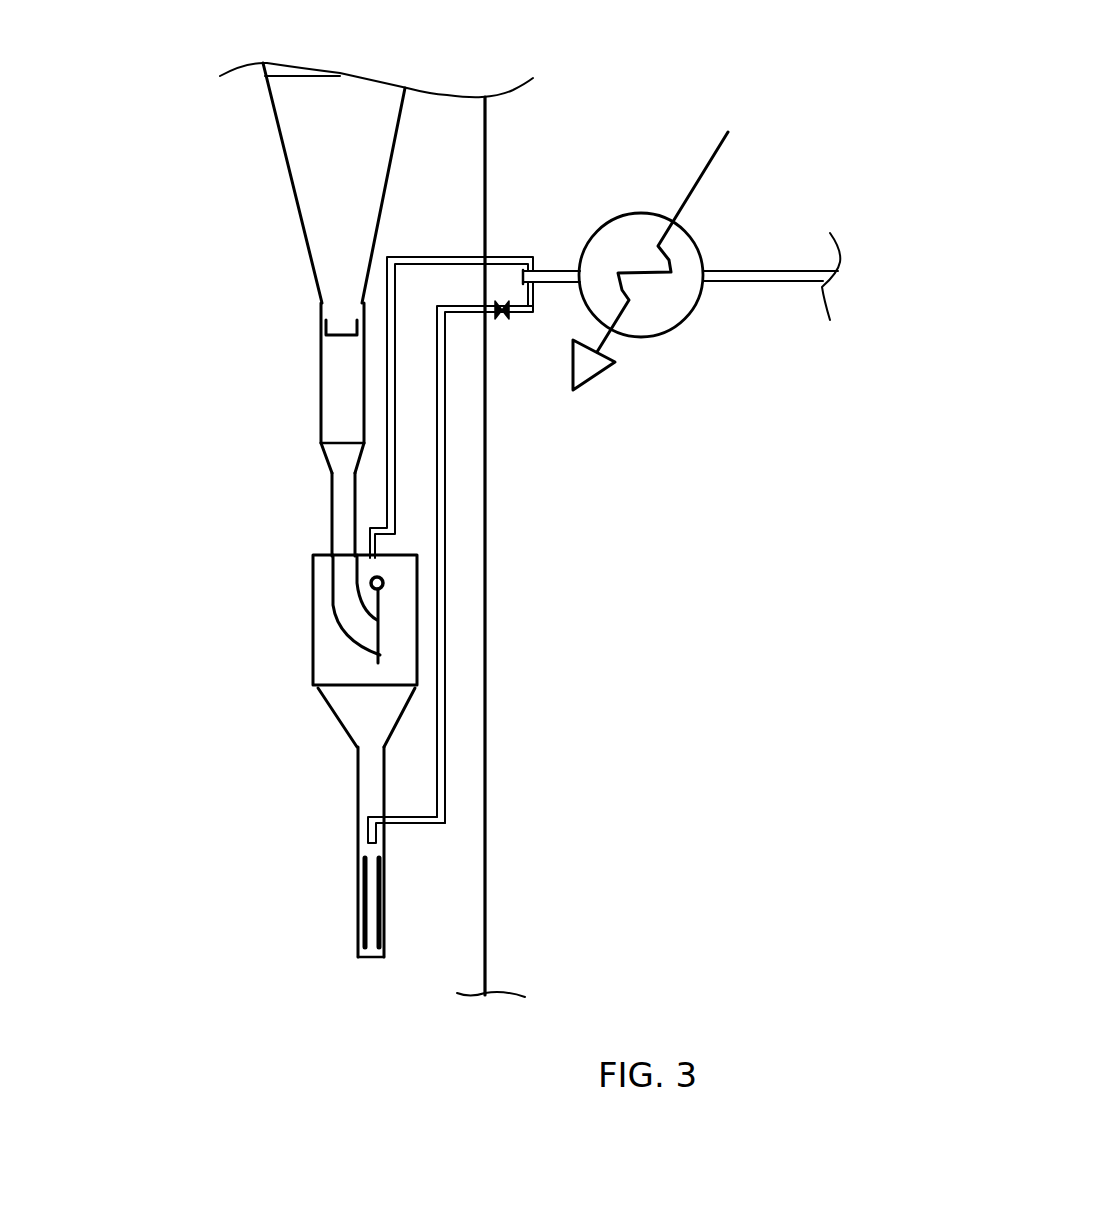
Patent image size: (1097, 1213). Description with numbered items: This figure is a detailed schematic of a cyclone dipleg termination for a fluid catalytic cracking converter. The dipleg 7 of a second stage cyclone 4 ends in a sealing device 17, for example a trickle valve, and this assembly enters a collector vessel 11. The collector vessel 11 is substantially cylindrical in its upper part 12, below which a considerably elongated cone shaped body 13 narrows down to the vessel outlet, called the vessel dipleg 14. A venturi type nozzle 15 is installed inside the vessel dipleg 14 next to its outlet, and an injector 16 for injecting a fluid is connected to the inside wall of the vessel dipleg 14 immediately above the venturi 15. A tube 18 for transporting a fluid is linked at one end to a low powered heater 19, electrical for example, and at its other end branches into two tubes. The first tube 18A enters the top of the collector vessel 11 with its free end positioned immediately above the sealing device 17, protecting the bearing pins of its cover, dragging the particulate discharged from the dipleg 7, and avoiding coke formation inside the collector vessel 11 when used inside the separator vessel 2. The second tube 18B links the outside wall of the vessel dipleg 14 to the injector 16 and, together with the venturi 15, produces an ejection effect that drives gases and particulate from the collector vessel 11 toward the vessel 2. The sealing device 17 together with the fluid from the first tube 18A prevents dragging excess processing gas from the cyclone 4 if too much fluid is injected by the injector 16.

The separator vessel 2 is at (495, 852).
The second stage cyclone 4 is at (335, 130).
The dipleg 7 is at (343, 495).
The collector vessel 11 is at (313, 582).
The upper part 12 is at (335, 642).
The cone shaped body 13 is at (368, 715).
The vessel dipleg 14 is at (353, 778).
The venturi type nozzle 15 is at (372, 900).
The injector 16 is at (362, 828).
The sealing device 17 is at (383, 652).
The tube 18 is at (552, 275).
The first tube 18A is at (500, 257).
The second tube 18B is at (448, 615).
The heater 19 is at (663, 308).